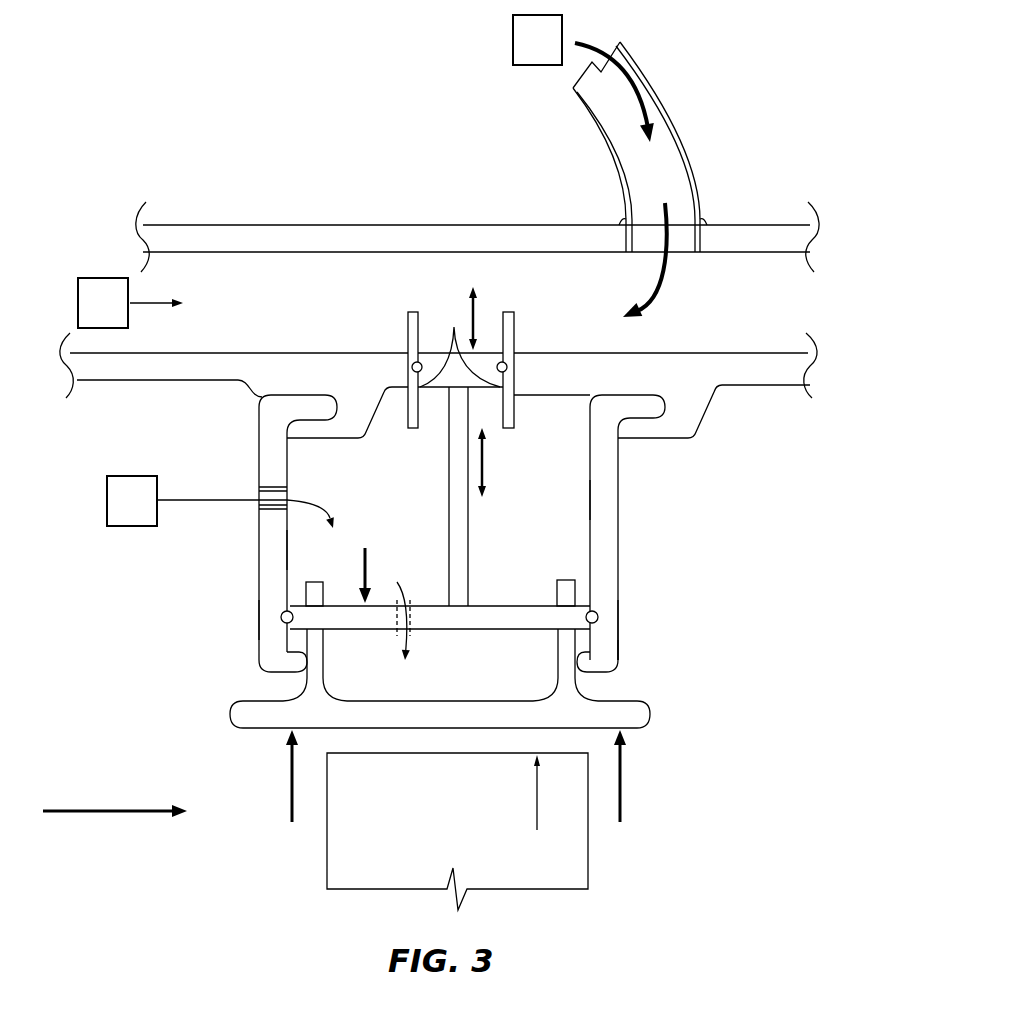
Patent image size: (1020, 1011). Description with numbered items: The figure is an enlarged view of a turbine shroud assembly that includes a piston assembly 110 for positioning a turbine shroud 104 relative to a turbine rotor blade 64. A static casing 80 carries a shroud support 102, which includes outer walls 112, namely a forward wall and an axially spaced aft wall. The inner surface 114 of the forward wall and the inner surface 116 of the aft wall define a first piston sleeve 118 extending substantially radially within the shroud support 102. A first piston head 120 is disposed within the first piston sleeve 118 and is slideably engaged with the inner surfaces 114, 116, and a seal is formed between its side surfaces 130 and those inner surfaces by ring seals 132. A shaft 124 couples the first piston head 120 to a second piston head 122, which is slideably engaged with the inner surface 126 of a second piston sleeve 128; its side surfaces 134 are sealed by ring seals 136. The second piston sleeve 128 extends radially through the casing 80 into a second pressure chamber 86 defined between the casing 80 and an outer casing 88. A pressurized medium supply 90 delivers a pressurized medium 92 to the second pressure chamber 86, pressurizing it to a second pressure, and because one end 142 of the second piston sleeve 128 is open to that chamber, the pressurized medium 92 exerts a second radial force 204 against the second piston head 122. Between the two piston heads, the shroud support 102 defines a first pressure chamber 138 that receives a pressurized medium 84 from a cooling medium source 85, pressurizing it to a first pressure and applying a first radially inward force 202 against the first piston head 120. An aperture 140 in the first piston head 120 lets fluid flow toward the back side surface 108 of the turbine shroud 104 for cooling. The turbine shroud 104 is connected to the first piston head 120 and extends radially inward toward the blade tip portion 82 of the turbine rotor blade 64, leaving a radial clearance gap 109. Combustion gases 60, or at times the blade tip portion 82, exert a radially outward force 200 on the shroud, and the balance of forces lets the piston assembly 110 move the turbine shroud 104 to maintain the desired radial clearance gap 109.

The combustion gases 60 is at (95, 807).
The turbine rotor blade 64 is at (457, 831).
The casing 80 is at (153, 372).
The blade tip portion 82 is at (540, 806).
The pressurized medium 84 is at (228, 503).
The cooling medium source 85 is at (183, 501).
The second pressure chamber 86 is at (497, 311).
The outer casing 88 is at (282, 237).
The pressurized medium supply 90 is at (320, 171).
The pressurized medium 92 is at (624, 78).
The shroud support 102 is at (629, 643).
The turbine shroud 104 is at (247, 718).
The back side surface 108 is at (432, 690).
The radial clearance gap 109 is at (385, 737).
The piston assembly 110 is at (496, 530).
The outer wall 112 is at (250, 442).
The inner surface of forward wall 114 is at (287, 549).
The inner surface of aft wall 116 is at (590, 438).
The first piston sleeve 118 is at (602, 498).
The first piston head 120 is at (503, 612).
The second piston head 122 is at (437, 360).
The shaft 124 is at (449, 499).
The inner surface of second piston sleeve 126 is at (419, 312).
The second piston sleeve 128 is at (515, 325).
The side surfaces of first piston head 130 is at (291, 608).
The ring seal 132 is at (282, 619).
The side surfaces of second piston head 134 is at (460, 345).
The ring seal 136 is at (411, 367).
The first pressure chamber 138 is at (375, 464).
The aperture 140 is at (412, 617).
The open end 142 is at (511, 303).
The radially outward force 200 is at (290, 792).
The first radially inward force 202 is at (368, 575).
The second radial force 204 is at (477, 318).